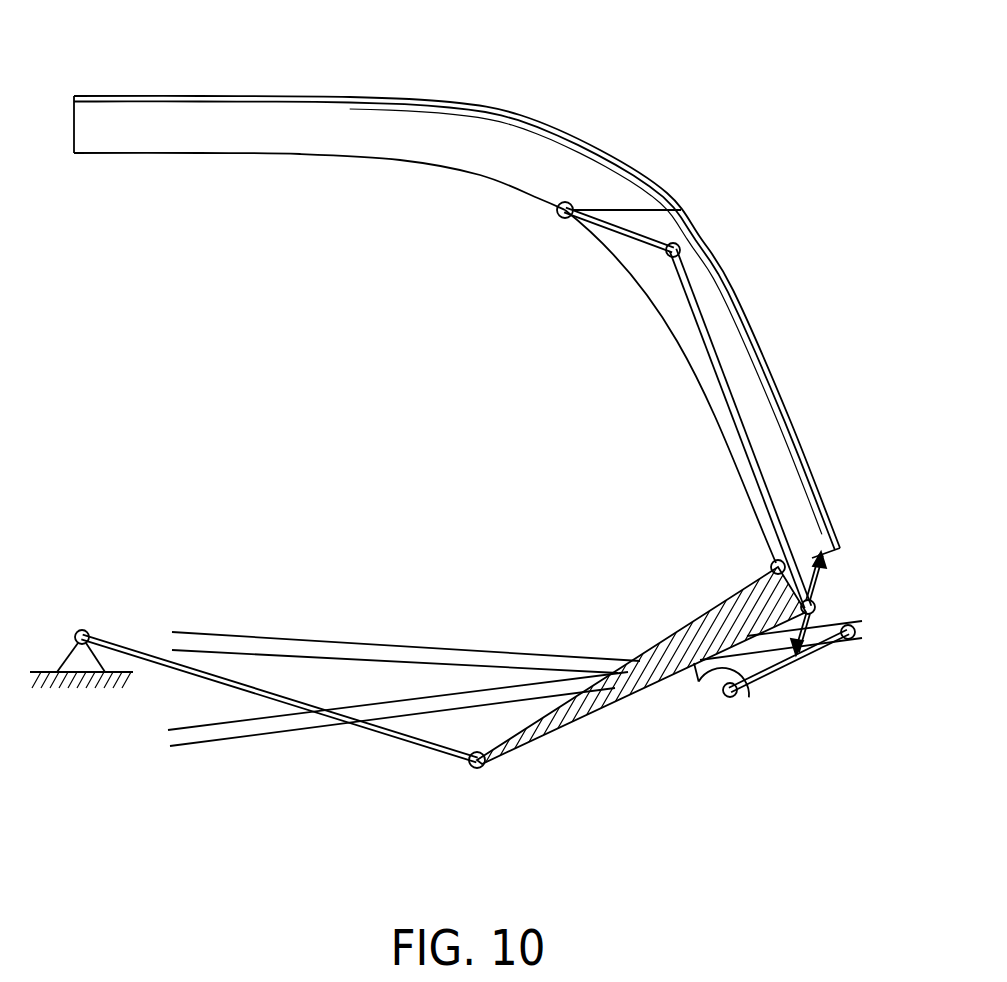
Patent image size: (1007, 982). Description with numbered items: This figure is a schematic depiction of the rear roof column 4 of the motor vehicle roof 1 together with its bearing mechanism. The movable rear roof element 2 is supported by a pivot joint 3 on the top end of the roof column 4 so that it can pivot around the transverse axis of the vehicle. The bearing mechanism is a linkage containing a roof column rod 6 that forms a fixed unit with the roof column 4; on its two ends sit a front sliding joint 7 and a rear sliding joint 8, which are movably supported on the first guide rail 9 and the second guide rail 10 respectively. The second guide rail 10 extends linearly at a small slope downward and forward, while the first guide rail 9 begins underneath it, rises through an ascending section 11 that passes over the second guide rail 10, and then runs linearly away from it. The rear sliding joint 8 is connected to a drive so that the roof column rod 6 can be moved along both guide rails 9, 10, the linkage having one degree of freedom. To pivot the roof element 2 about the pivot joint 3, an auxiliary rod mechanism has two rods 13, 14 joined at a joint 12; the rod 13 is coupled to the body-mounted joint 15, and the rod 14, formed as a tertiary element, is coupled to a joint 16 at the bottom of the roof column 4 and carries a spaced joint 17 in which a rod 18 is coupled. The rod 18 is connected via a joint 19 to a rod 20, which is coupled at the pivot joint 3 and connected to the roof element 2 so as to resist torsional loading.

The motor vehicle roof 1 is at (633, 98).
The rear roof element 2 is at (436, 128).
The pivot joint 3 is at (558, 216).
The rear roof column 4 is at (762, 383).
The roof column rod 6 is at (792, 669).
The front sliding joint 7 is at (733, 698).
The rear sliding joint 8 is at (849, 640).
The first guide rail 9 is at (358, 648).
The second guide rail 10 is at (243, 726).
The ascending section 11 is at (715, 686).
The joint 12 is at (478, 768).
The rod 13 is at (383, 738).
The rod 14 is at (603, 695).
The body-mounted joint 15 is at (82, 630).
The joint 16 is at (770, 568).
The joint 17 is at (817, 607).
The rod 18 is at (736, 410).
The joint 19 is at (682, 249).
The rod 20 is at (627, 236).